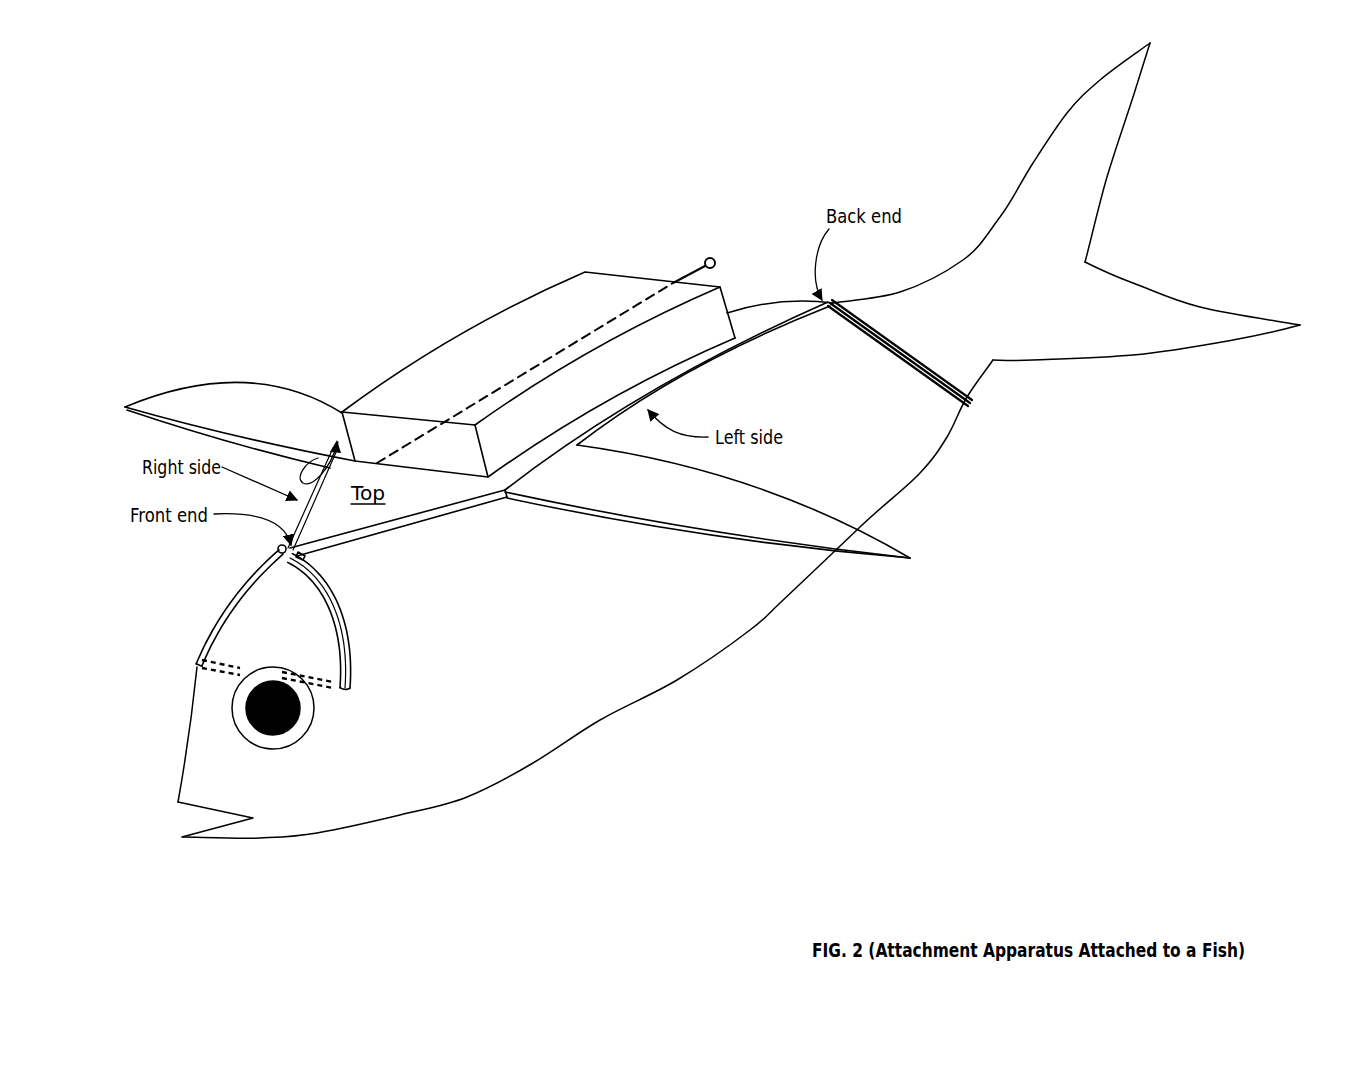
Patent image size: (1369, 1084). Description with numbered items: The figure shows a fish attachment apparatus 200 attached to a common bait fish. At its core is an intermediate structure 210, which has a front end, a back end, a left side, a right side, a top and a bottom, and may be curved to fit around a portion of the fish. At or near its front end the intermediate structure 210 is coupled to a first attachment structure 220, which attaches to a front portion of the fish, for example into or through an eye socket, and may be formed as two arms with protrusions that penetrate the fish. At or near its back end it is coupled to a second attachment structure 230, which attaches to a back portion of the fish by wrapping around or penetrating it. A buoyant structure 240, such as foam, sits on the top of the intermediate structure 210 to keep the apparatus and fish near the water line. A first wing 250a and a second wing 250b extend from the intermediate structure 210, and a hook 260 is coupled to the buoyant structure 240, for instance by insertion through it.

The fish attachment apparatus 200 is at (248, 118).
The intermediate structure 210 is at (418, 498).
The first attachment structure 220 is at (360, 670).
The second attachment structure 230 is at (906, 366).
The buoyant structure 240 is at (498, 345).
The first wing 250a is at (245, 408).
The second wing 250b is at (828, 538).
The hook 260 is at (692, 268).